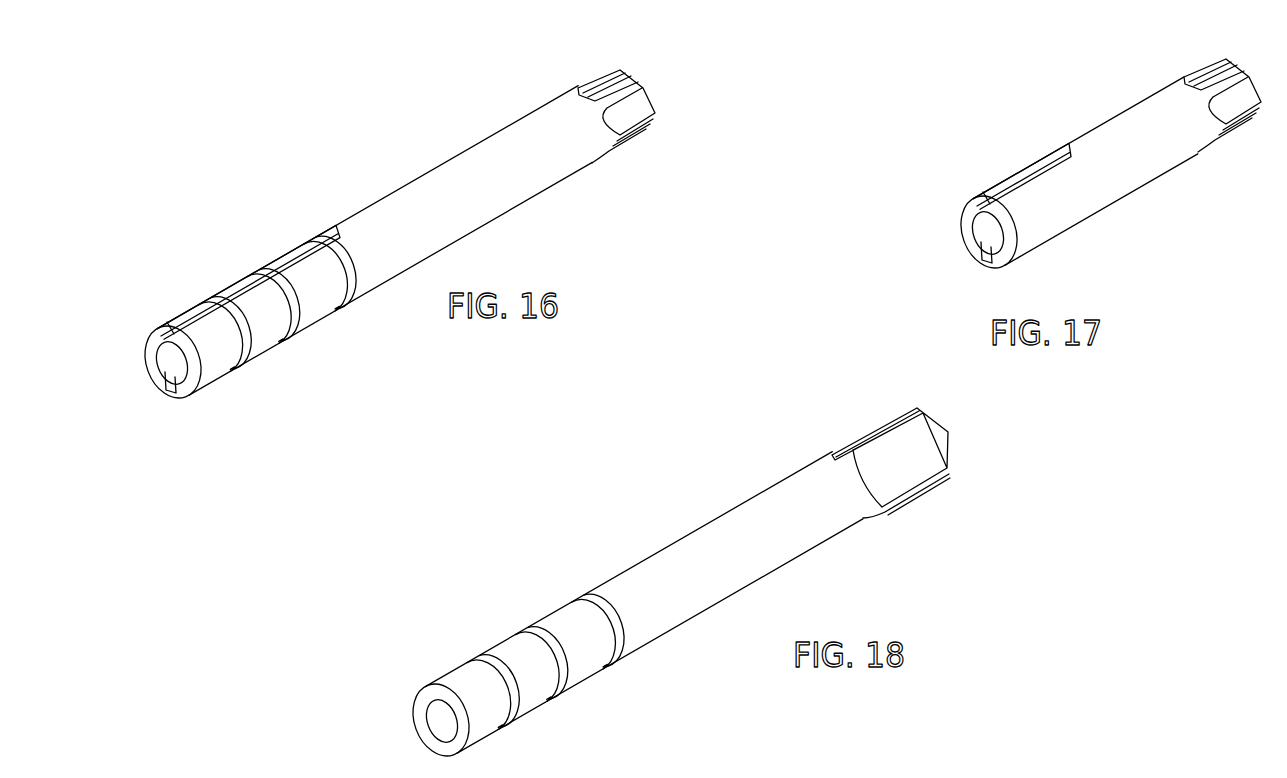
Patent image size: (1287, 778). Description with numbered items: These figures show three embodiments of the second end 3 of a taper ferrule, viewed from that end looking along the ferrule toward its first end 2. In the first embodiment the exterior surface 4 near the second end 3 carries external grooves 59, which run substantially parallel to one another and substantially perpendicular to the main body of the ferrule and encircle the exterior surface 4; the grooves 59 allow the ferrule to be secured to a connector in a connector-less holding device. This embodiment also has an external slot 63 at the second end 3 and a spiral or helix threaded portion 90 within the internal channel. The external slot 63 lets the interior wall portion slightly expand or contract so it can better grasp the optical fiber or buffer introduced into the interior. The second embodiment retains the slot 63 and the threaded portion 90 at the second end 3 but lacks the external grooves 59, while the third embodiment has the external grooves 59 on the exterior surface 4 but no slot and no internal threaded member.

In FIG. 16, the first end 2 is at (650, 97).
In FIG. 16, the second end 3 is at (150, 357).
In FIG. 17, the second end 3 is at (966, 222).
In FIG. 17, the exterior surface 4 is at (1103, 196).
In FIG. 18, the exterior surface 4 is at (700, 603).
In FIG. 16, the external grooves 59 is at (355, 298).
In FIG. 18, the external grooves 59 is at (623, 657).
In FIG. 16, the external slot 63 is at (217, 302).
In FIG. 17, the external slot 63 is at (1028, 168).
In FIG. 16, the spiral or helix threaded portion 90 is at (168, 378).